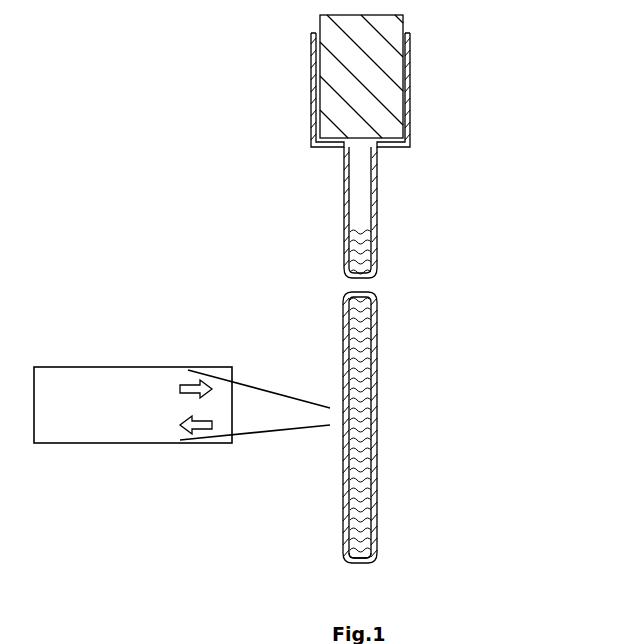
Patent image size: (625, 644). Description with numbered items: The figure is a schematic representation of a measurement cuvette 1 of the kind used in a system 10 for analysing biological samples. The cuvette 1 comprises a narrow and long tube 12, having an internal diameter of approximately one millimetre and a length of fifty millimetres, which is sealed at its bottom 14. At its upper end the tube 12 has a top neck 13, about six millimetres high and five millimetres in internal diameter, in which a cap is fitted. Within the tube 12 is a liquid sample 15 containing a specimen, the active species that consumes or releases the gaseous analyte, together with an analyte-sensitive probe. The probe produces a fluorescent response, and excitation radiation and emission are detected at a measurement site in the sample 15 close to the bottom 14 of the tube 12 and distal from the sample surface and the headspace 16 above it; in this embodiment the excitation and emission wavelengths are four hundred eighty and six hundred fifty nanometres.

The cuvette 1 is at (228, 144).
The system 10 is at (105, 643).
The tube 12 is at (375, 326).
The top neck 13 is at (412, 97).
The bottom 14 is at (357, 563).
The liquid sample 15 is at (358, 399).
The headspace 16 is at (358, 180).